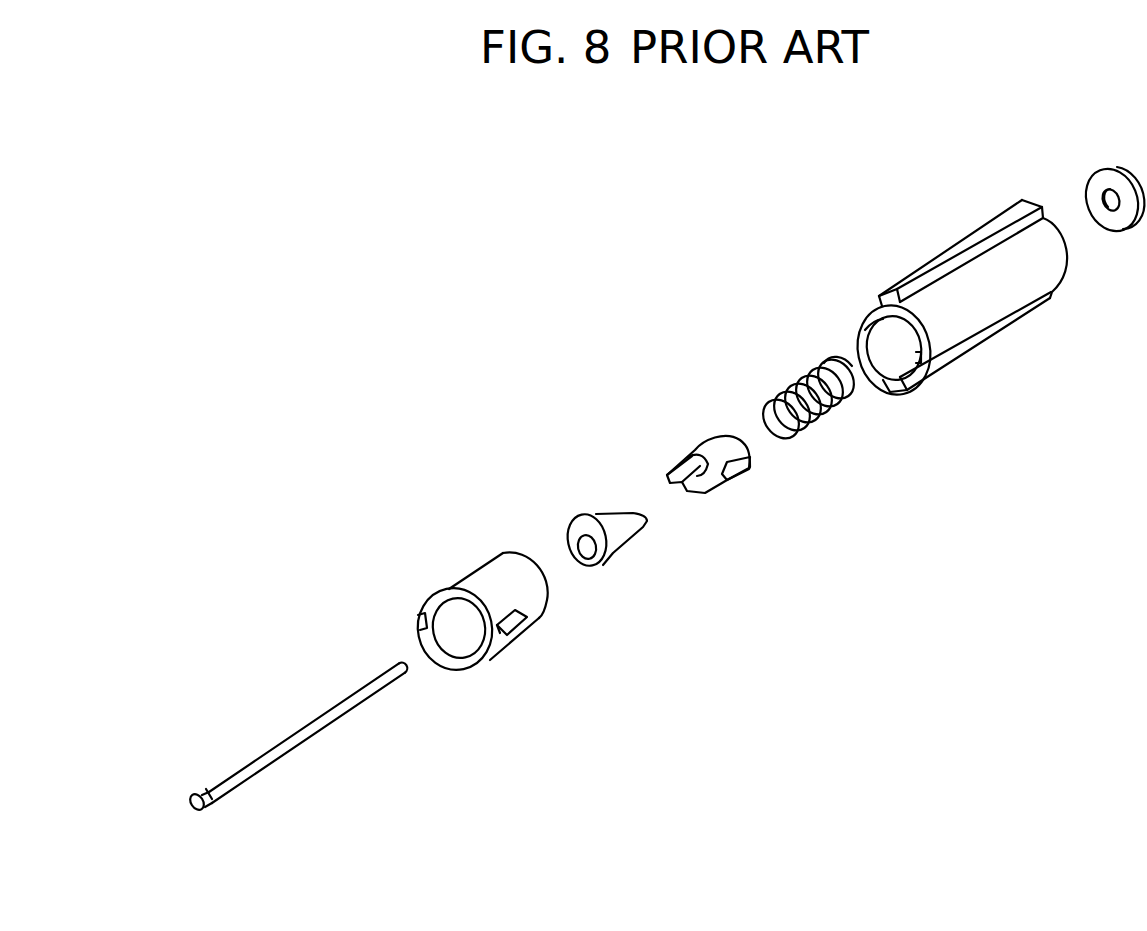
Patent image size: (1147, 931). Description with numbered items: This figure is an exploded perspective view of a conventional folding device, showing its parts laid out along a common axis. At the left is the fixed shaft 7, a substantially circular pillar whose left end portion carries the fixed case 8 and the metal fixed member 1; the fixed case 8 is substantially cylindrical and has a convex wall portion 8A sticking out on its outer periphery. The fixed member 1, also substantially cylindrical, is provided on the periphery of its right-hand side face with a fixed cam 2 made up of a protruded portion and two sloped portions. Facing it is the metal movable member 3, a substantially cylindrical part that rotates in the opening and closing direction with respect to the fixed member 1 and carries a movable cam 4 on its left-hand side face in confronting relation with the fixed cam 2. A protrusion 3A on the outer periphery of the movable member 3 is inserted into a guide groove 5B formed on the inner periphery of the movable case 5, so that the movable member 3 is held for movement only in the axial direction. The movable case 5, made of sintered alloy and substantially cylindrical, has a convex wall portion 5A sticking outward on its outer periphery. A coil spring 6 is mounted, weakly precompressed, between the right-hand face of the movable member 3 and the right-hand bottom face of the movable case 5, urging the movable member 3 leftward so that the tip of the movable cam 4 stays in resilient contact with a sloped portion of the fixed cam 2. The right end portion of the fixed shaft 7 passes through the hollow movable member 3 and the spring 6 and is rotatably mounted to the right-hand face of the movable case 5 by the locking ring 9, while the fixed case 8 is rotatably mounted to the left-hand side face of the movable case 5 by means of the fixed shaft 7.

The fixed member 1 is at (610, 560).
The fixed cam 2 is at (637, 525).
The movable member 3 is at (698, 447).
The protrusion 3A is at (752, 472).
The movable cam 4 is at (712, 492).
The movable case 5 is at (983, 323).
The convex wall portion 5A is at (940, 263).
The guide groove 5B is at (925, 367).
The coil spring 6 is at (800, 377).
The fixed shaft 7 is at (335, 702).
The fixed case 8 is at (477, 562).
The convex wall portion 8A is at (517, 628).
The locking ring 9 is at (1093, 173).